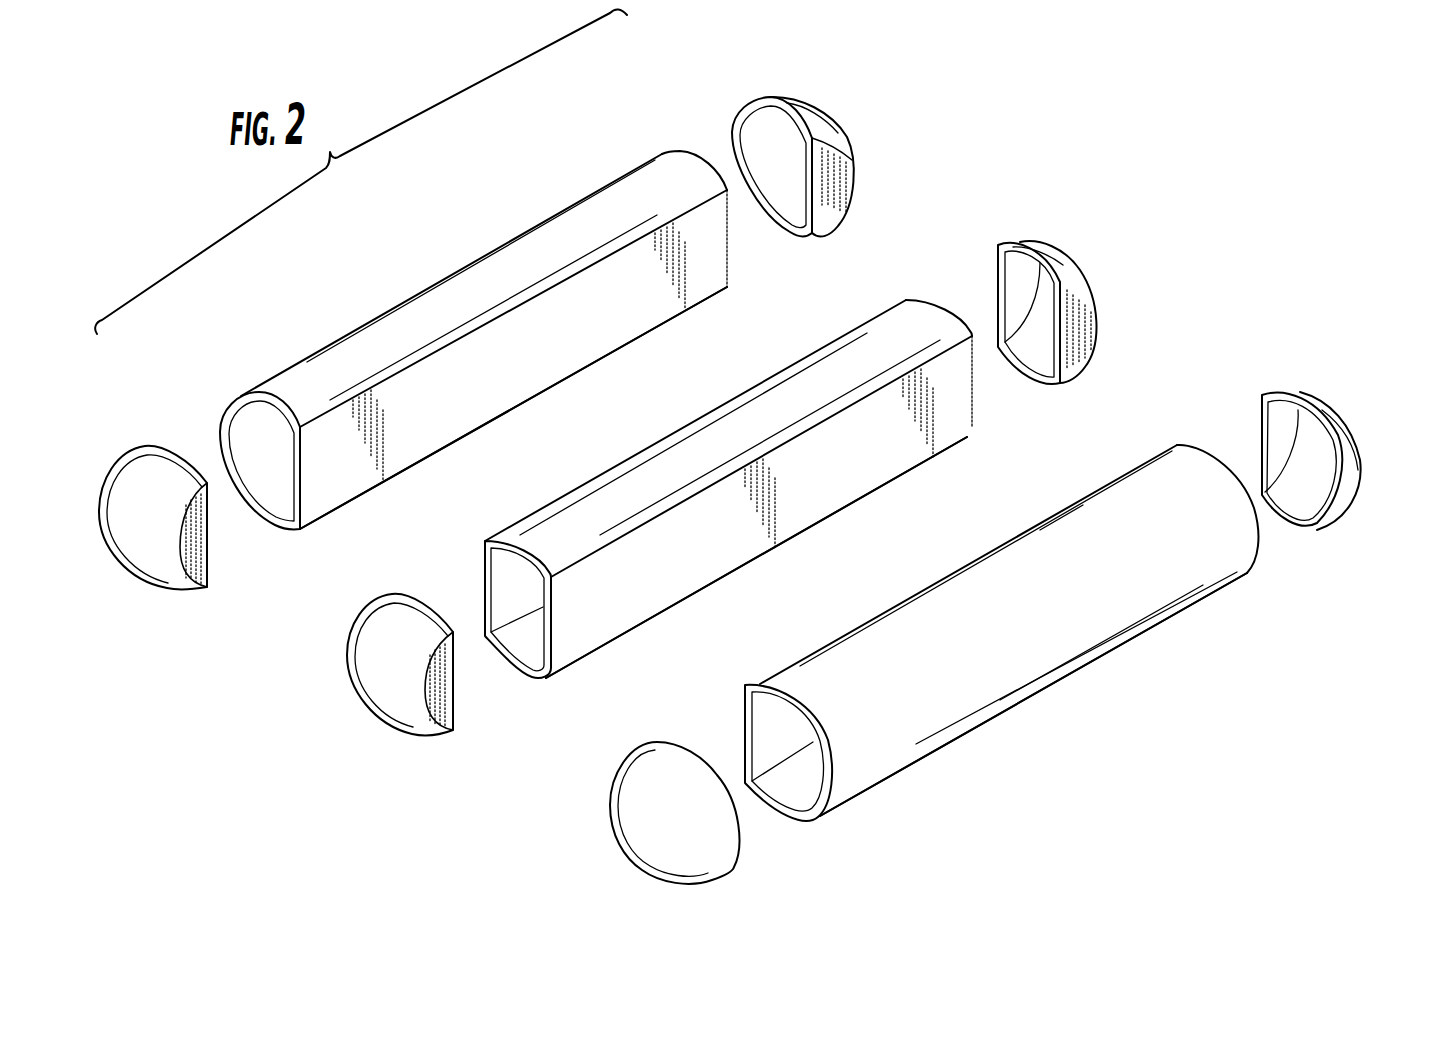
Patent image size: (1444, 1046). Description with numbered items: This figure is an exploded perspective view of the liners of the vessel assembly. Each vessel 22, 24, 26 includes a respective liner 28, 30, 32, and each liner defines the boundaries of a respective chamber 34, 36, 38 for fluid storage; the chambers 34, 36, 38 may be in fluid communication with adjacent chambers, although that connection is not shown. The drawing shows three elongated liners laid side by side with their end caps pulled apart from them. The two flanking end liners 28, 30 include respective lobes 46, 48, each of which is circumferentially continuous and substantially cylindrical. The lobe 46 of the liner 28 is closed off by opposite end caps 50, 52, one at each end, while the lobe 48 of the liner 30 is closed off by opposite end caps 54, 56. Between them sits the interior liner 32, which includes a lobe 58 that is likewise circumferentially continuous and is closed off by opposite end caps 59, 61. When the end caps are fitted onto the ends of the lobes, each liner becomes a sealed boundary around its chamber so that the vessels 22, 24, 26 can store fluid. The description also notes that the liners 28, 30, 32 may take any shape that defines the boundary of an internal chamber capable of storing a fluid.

The vessel 22 is at (849, 85).
The vessel 24 is at (1364, 387).
The vessel 26 is at (1112, 231).
The liner 28 is at (349, 307).
The liner 30 is at (850, 598).
The interior liner 32 is at (605, 439).
The chamber 34 is at (285, 457).
The chamber 36 is at (787, 750).
The chamber 38 is at (535, 604).
The lobe 46 is at (424, 459).
The lobe 48 is at (937, 748).
The lobe 58 is at (667, 612).
The end cap 50 is at (187, 587).
The end cap 52 is at (842, 133).
The end cap 54 is at (703, 880).
The end cap 56 is at (1353, 432).
The end cap 59 is at (433, 732).
The end cap 61 is at (1087, 277).